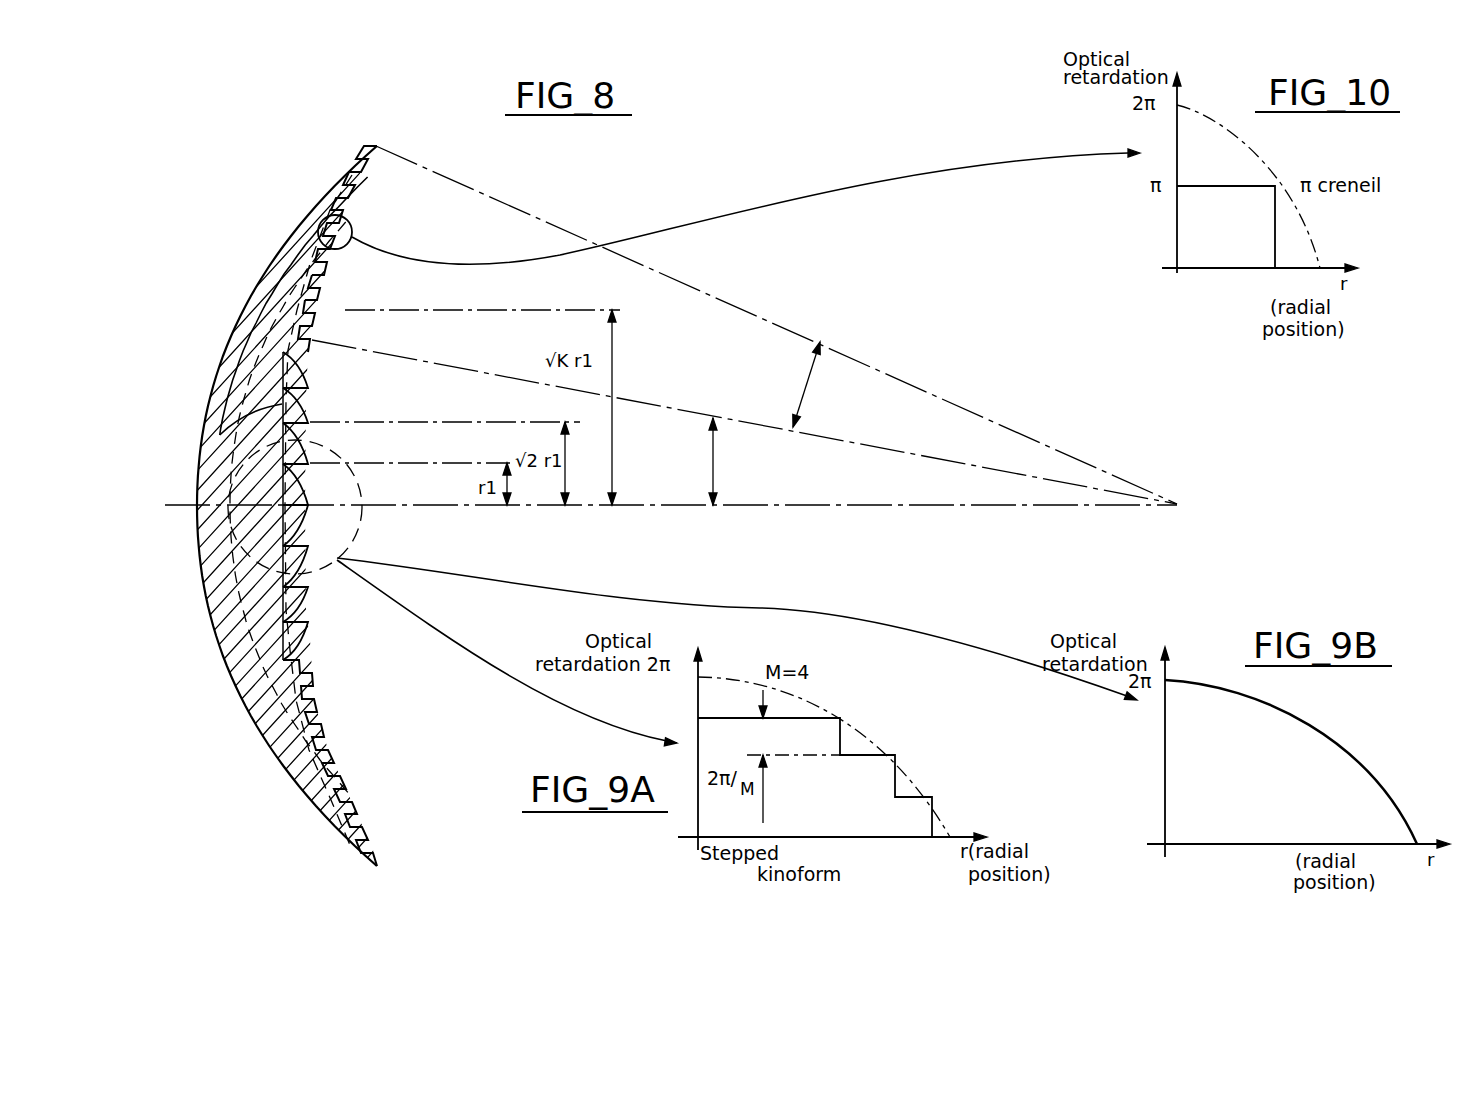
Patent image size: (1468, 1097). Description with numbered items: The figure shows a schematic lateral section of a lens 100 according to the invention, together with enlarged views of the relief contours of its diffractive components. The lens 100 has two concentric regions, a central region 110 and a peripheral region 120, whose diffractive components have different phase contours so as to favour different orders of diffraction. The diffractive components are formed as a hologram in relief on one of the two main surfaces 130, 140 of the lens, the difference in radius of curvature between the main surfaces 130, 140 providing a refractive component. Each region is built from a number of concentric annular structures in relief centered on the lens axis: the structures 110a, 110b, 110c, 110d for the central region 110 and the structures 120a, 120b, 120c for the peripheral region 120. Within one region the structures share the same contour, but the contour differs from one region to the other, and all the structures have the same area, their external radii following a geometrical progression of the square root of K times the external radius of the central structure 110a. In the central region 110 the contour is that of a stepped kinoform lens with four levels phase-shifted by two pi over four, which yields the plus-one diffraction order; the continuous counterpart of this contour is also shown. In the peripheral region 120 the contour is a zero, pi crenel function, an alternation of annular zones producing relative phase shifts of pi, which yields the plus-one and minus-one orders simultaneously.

The lens 100 is at (523, 505).
The central region 110 is at (744, 422).
The central structure in relief 110a is at (309, 497).
The structure in relief 110b is at (309, 457).
The structure in relief 110c is at (309, 394).
The structure in relief 110d is at (319, 374).
The peripheral region 120 is at (776, 325).
The structure in relief 120a is at (314, 329).
The structure in relief 120b is at (320, 290).
The structure in relief 120c is at (332, 262).
The main surface 130 is at (218, 434).
The main surface 140 is at (212, 397).